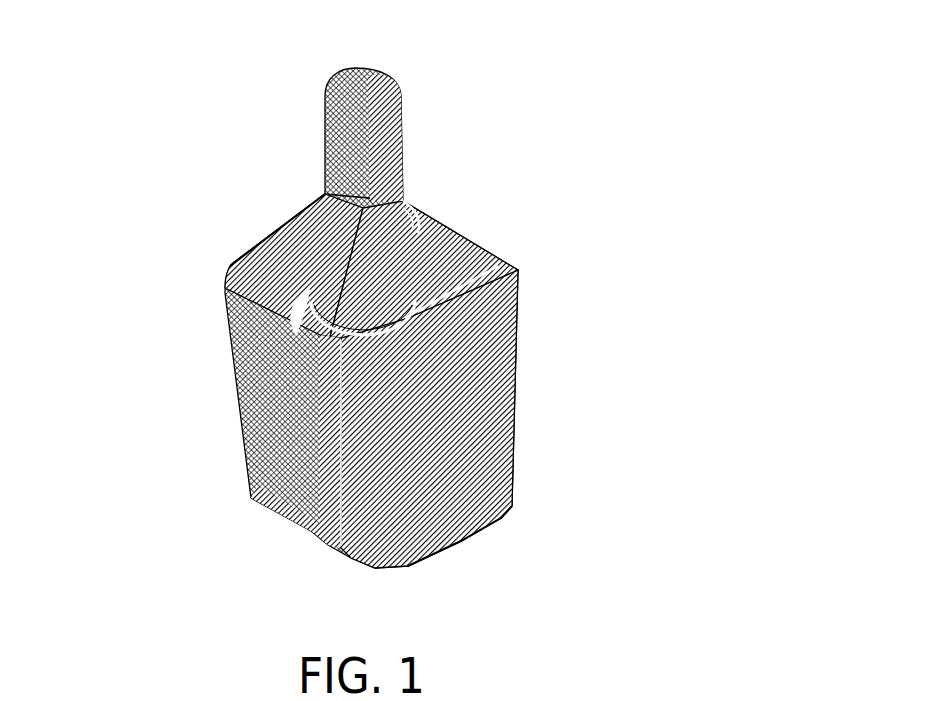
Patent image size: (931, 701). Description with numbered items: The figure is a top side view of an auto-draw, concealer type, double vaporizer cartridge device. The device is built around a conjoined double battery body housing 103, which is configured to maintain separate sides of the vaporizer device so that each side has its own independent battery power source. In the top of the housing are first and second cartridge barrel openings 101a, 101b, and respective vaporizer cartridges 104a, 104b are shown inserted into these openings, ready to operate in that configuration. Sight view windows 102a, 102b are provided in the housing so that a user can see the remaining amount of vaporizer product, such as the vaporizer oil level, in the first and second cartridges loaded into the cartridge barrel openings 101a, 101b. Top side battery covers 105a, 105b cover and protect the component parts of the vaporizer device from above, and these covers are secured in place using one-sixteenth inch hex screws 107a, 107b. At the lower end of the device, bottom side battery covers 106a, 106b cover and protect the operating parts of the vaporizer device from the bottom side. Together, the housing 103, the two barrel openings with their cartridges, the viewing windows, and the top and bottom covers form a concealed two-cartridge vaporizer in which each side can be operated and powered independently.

The first cartridge barrel opening 101a is at (397, 196).
The second cartridge barrel opening 101b is at (397, 310).
The sight view window 102a is at (515, 348).
The sight view window 102b is at (327, 383).
The conjoined double battery body housing 103 is at (440, 413).
The vaporizer cartridge 104a is at (380, 106).
The vaporizer cartridge 104b is at (366, 187).
The top side battery cover 105a is at (250, 275).
The top side battery cover 105b is at (455, 243).
The bottom side battery cover 106a is at (268, 500).
The bottom side battery cover 106b is at (483, 535).
The hex screw 107a is at (290, 217).
The hex screw 107b is at (425, 282).